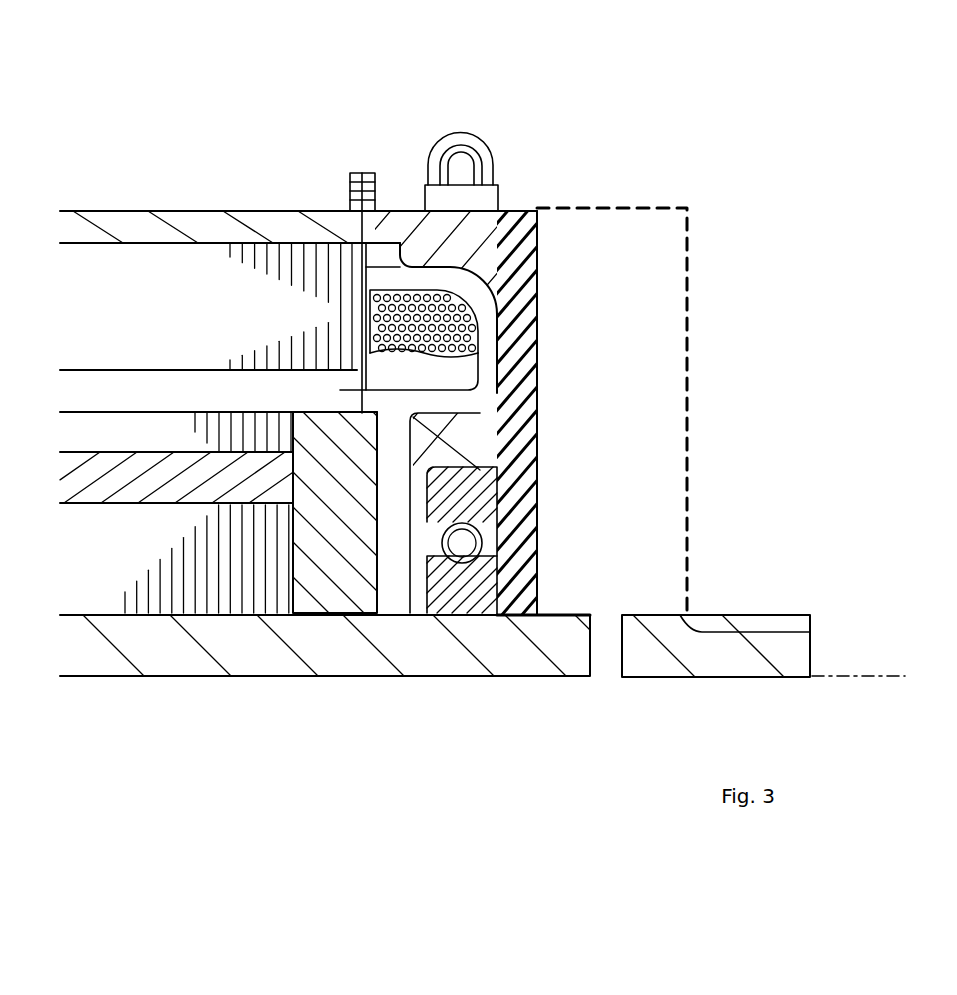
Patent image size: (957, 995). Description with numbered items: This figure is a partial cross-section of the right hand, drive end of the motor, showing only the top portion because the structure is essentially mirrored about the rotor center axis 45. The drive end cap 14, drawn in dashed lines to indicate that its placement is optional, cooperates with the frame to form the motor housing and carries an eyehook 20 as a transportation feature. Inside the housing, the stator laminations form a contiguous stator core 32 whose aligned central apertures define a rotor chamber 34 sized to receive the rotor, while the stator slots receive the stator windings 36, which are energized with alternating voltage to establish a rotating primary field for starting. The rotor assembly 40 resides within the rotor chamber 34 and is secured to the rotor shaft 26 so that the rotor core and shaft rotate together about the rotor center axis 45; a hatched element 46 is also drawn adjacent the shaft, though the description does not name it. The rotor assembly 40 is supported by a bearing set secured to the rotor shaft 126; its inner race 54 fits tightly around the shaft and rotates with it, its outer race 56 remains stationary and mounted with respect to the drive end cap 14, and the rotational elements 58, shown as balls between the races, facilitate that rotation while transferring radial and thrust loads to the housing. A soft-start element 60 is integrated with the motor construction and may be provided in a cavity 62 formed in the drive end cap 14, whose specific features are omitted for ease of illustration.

The drive end cap 14 is at (570, 207).
The eyehook 20 is at (537, 211).
The rotor shaft 26 is at (190, 675).
The stator core 32 is at (150, 310).
The rotor chamber 34 is at (497, 393).
The stator windings 36 is at (410, 295).
The rotor assembly 40 is at (103, 563).
The rotor center axis 45 is at (873, 684).
The hub 46 is at (331, 583).
The inner race 54 is at (470, 592).
The outer race 56 is at (503, 523).
The rotational elements 58 is at (457, 547).
The soft-start element 60 is at (668, 230).
The cavity 62 is at (653, 394).
The rotor shaft 126 is at (805, 652).